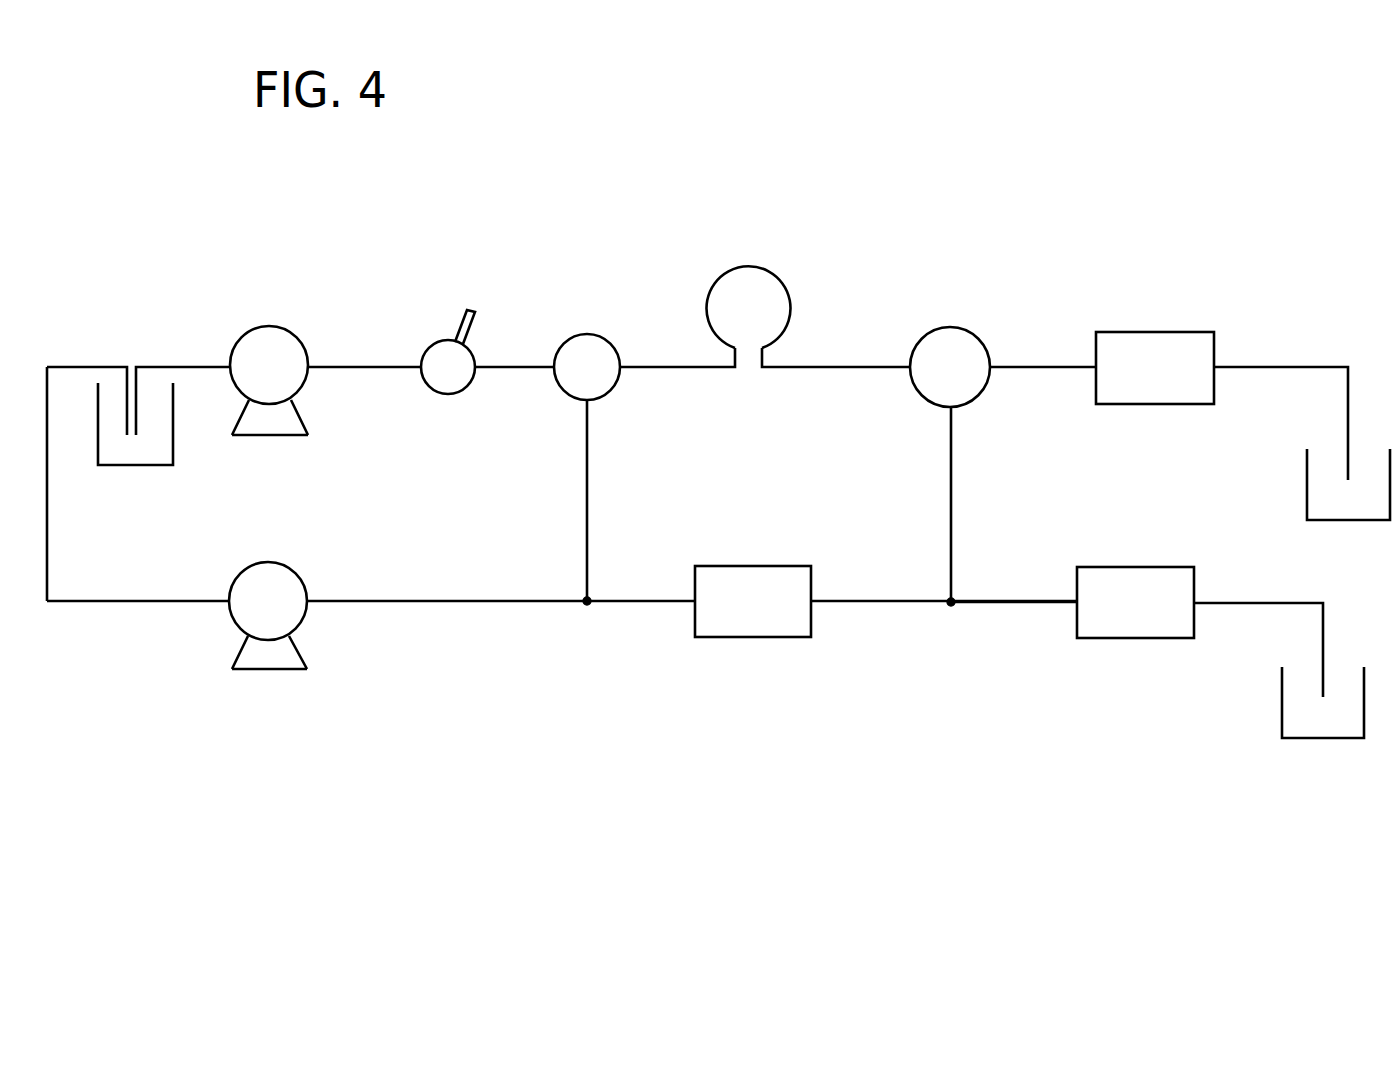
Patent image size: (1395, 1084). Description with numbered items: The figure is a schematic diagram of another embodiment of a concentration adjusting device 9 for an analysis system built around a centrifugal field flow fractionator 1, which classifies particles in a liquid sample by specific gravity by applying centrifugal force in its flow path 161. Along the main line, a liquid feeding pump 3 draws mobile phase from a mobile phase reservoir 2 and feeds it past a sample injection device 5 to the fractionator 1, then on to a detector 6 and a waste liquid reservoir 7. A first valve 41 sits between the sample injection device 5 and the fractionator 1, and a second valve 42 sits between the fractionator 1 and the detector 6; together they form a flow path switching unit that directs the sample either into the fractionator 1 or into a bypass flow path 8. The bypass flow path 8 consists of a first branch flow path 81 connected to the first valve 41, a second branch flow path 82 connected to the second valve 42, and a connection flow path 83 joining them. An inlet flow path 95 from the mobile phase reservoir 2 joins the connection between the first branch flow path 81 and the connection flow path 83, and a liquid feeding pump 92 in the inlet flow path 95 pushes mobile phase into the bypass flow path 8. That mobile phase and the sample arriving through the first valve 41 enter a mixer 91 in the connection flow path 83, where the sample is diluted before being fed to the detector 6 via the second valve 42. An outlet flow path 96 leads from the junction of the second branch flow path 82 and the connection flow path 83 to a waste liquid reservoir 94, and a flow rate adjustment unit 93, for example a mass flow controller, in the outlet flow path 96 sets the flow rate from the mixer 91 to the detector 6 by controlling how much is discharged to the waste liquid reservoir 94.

The centrifugal field flow fractionator 1 is at (747, 208).
The mobile phase reservoir 2 is at (131, 465).
The liquid feeding pump 3 is at (268, 435).
The sample injection device 5 is at (447, 395).
The first valve 41 is at (587, 332).
The flow path 161 is at (788, 300).
The second valve 42 is at (951, 328).
The detector 6 is at (1157, 332).
The waste liquid reservoir 7 is at (1350, 520).
The bypass flow path 8 is at (767, 549).
The first branch flow path 81 is at (587, 482).
The second branch flow path 82 is at (950, 525).
The connection flow path 83 is at (630, 603).
The concentration adjusting device 9 is at (658, 727).
The mixer 91 is at (755, 637).
The liquid feeding pump 92 is at (268, 669).
The flow rate adjustment unit 93 is at (1138, 638).
The waste liquid reservoir 94 is at (1325, 738).
The inlet flow path 95 is at (420, 602).
The outlet flow path 96 is at (1005, 603).